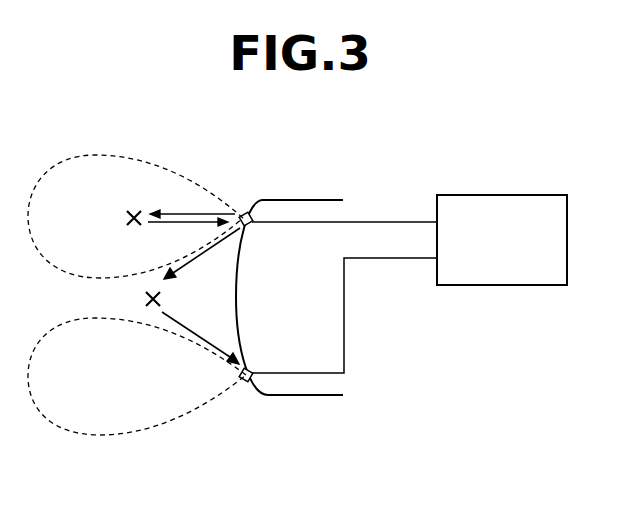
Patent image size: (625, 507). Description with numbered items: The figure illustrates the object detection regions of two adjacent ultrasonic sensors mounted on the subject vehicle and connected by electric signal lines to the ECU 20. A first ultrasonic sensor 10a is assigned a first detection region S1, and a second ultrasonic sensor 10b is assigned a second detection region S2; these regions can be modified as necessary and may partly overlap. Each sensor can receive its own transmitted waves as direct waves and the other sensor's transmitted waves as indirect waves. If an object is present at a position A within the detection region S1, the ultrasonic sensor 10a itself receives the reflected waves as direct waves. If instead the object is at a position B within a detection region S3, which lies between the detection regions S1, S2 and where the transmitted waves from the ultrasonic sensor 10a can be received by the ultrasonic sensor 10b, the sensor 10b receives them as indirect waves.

The first ultrasonic sensor 10a is at (248, 212).
The second ultrasonic sensor 10b is at (247, 384).
The ECU 20 is at (537, 195).
The first detection region S1 is at (65, 158).
The second detection region S2 is at (65, 433).
The third detection region S3 is at (201, 296).
The position A is at (170, 219).
The position B is at (143, 300).